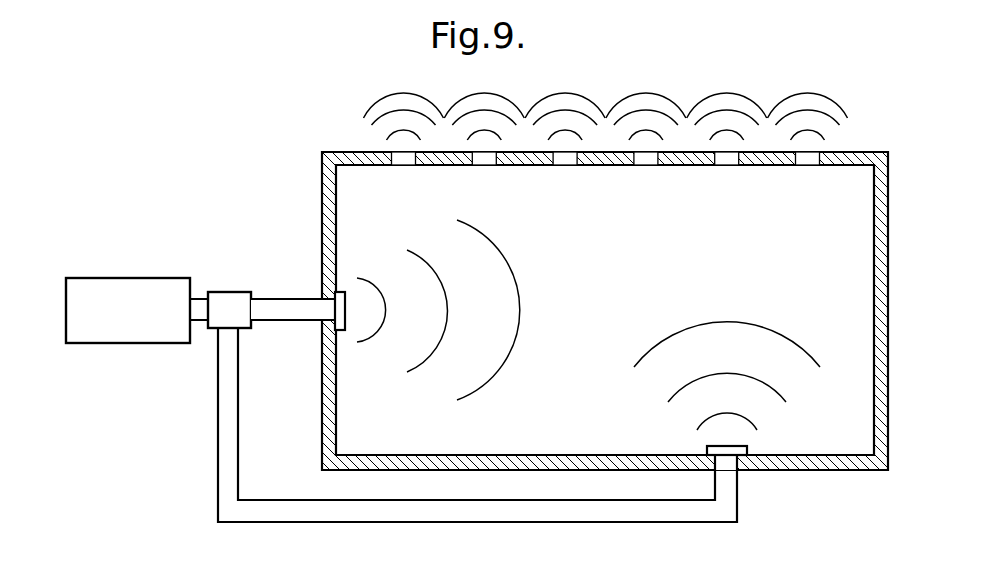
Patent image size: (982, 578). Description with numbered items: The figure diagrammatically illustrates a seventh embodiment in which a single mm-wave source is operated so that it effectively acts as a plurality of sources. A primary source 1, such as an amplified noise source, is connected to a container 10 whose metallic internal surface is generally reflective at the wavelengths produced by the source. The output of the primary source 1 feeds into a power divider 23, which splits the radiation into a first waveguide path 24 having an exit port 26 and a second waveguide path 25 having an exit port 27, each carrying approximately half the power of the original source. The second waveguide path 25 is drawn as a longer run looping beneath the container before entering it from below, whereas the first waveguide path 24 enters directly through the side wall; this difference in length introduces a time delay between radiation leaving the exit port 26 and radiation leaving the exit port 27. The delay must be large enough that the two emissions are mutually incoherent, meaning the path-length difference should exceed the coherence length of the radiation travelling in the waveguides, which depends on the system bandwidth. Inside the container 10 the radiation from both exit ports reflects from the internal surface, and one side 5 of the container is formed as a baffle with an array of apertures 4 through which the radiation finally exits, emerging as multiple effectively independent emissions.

The primary source 1 is at (130, 278).
The apertures 4 is at (396, 127).
The side 5 is at (685, 163).
The container 10 is at (322, 178).
The power divider 23 is at (227, 299).
The first waveguide path 24 is at (290, 308).
The second waveguide path 25 is at (280, 512).
The exit port 26 is at (346, 318).
The exit port 27 is at (745, 451).